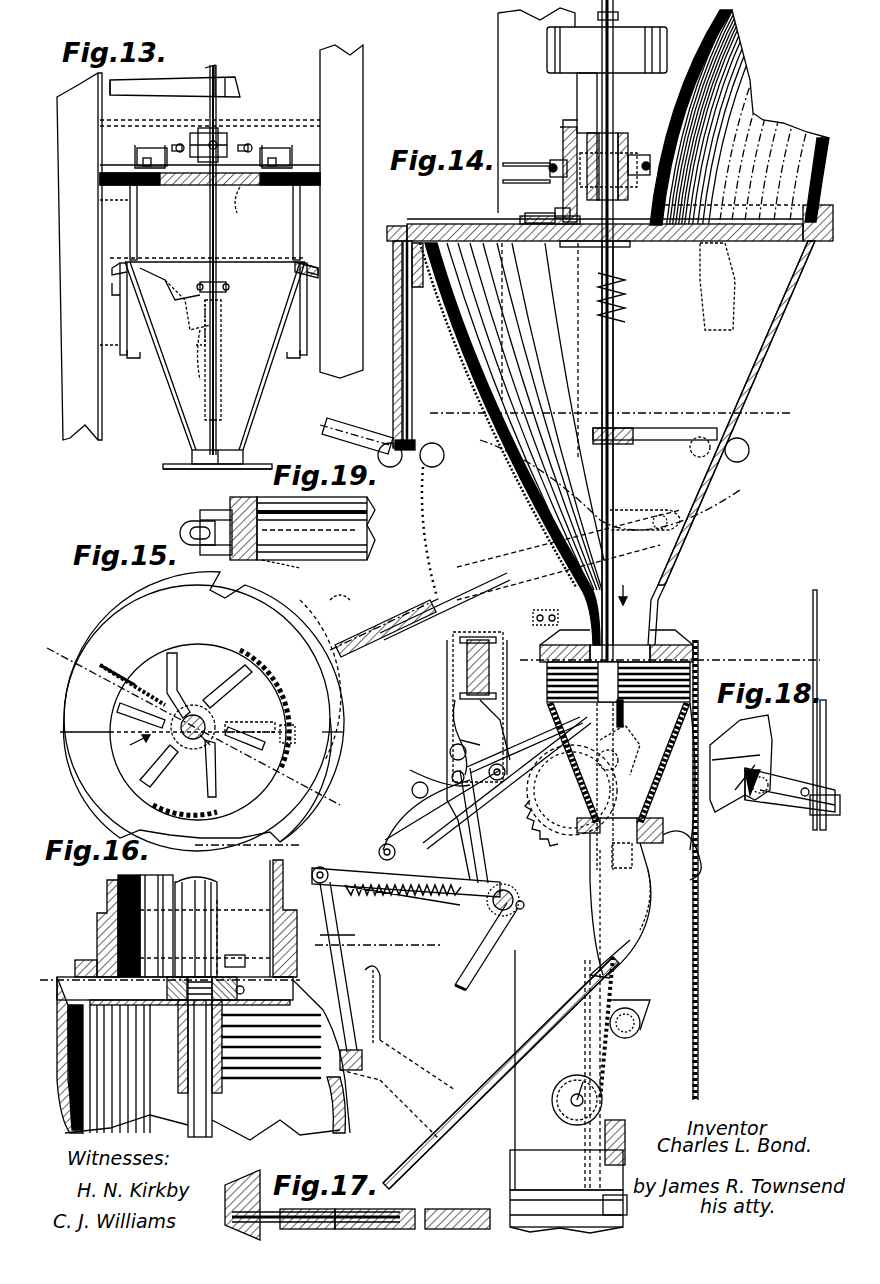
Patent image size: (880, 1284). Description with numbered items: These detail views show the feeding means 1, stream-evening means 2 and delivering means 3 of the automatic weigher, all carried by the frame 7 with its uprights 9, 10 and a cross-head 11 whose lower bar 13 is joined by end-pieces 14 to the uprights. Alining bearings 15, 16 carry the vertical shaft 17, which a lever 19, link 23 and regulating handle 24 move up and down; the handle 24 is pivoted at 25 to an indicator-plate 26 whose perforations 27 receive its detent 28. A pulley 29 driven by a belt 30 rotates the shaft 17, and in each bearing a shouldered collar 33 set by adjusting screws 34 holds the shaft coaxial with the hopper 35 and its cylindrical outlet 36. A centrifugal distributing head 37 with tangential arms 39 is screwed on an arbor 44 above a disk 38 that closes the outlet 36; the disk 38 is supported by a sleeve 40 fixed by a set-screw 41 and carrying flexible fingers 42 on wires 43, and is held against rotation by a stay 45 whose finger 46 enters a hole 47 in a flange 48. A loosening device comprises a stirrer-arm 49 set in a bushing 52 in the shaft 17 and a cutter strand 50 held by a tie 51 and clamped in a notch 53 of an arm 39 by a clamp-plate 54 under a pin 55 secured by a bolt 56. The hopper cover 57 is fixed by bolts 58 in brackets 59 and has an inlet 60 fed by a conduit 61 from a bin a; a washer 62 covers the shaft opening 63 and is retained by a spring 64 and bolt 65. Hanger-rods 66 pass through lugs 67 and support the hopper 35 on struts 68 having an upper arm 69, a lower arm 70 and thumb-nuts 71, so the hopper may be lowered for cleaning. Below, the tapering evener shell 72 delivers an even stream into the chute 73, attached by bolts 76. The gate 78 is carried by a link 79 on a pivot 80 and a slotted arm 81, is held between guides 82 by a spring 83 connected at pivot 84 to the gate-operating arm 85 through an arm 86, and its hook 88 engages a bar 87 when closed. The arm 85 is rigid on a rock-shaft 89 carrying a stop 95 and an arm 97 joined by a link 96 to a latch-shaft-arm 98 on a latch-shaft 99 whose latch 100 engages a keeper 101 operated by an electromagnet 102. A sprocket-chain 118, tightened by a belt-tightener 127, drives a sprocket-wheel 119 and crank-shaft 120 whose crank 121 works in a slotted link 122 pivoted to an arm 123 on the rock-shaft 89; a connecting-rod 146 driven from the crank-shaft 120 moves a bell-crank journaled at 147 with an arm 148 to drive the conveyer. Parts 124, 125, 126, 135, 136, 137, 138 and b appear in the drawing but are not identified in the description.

In FIG. 14, the feeding means 1 is at (770, 370).
In FIG. 14, the stream-evening means 2 is at (748, 652).
In FIG. 14, the delivering means 3 is at (497, 1100).
In FIG. 14, the frame 7 is at (505, 1155).
In FIG. 13, the upright 9 is at (300, 215).
In FIG. 14, the upright 9 is at (510, 500).
In FIG. 13, the upright 10 is at (187, 265).
In FIG. 14, the upright 10 is at (468, 432).
In FIG. 13, the cross-head 11 is at (305, 130).
In FIG. 14, the cross-head 11 is at (528, 125).
In FIG. 13, the lower bar 13 is at (255, 125).
In FIG. 14, the lower bar 13 is at (563, 135).
In FIG. 13, the end-pieces 14 is at (318, 72).
In FIG. 14, the end-pieces 14 is at (510, 72).
In FIG. 15, the alining bearing 15 is at (326, 839).
In FIG. 16, the alining bearing 15 is at (190, 911).
In FIG. 14, the alining bearing 15 is at (667, 655).
In FIG. 13, the alining bearing 16 is at (197, 135).
In FIG. 15, the alining bearing 16 is at (210, 720).
In FIG. 14, the alining bearing 16 is at (640, 138).
In FIG. 13, the vertical shaft 17 is at (218, 325).
In FIG. 15, the vertical shaft 17 is at (205, 705).
In FIG. 16, the vertical shaft 17 is at (200, 878).
In FIG. 14, the vertical shaft 17 is at (615, 372).
In FIG. 16, the lever 19 is at (315, 934).
In FIG. 14, the lever 19 is at (418, 945).
In FIG. 14, the link 23 is at (615, 10).
In FIG. 14, the regulating handle 24 is at (372, 630).
In FIG. 14, the pivot 25 is at (690, 520).
In FIG. 14, the indicator-plate 26 is at (451, 532).
In FIG. 14, the perforations 27 is at (420, 530).
In FIG. 14, the pin or detent 28 is at (440, 610).
In FIG. 13, the pulley 29 is at (215, 88).
In FIG. 14, the pulley 29 is at (607, 50).
In FIG. 13, the belt 30 is at (165, 80).
In FIG. 13, the shouldered collar 33 is at (220, 135).
In FIG. 14, the shouldered collar 33 is at (622, 130).
In FIG. 13, the horizontal adjusting screws 34 is at (213, 145).
In FIG. 14, the horizontal adjusting screws 34 is at (548, 168).
In FIG. 13, the hopper 35 is at (192, 360).
In FIG. 14, the hopper 35 is at (778, 320).
In FIG. 13, the cylindrical outlet 36 is at (205, 473).
In FIG. 15, the cylindrical outlet 36 is at (252, 838).
In FIG. 16, the cylindrical outlet 36 is at (240, 890).
In FIG. 14, the cylindrical outlet 36 is at (650, 580).
In FIG. 15, the centrifugal distributing head 37 is at (130, 745).
In FIG. 16, the centrifugal distributing head 37 is at (165, 965).
In FIG. 18, the centrifugal distributing head 37 is at (741, 763).
In FIG. 14, the centrifugal distributing head 37 is at (660, 640).
In FIG. 15, the disk 38 is at (140, 780).
In FIG. 16, the disk 38 is at (298, 986).
In FIG. 14, the disk 38 is at (680, 655).
In FIG. 15, the tangential arms 39 is at (155, 648).
In FIG. 16, the tangential arms 39 is at (175, 991).
In FIG. 18, the tangential arms 39 is at (835, 815).
In FIG. 16, the sleeve 40 is at (202, 1126).
In FIG. 17, the sleeve 40 is at (243, 1180).
In FIG. 14, the sleeve 40 is at (630, 735).
In FIG. 15, the set-screw 41 is at (205, 680).
In FIG. 16, the set-screw 41 is at (185, 1063).
In FIG. 15, the flexible fingers 42 is at (98, 722).
In FIG. 16, the flexible fingers 42 is at (275, 1060).
In FIG. 17, the flexible fingers 42 is at (430, 1210).
In FIG. 14, the flexible fingers 42 is at (631, 737).
In FIG. 15, the wires 43 is at (191, 750).
In FIG. 16, the wires 43 is at (255, 1075).
In FIG. 17, the wires 43 is at (270, 1210).
In FIG. 16, the arbor 44 is at (212, 1120).
In FIG. 14, the arbor 44 is at (612, 750).
In FIG. 15, the stay 45 is at (125, 680).
In FIG. 16, the stay 45 is at (95, 1005).
In FIG. 15, the upright finger 46 is at (100, 665).
In FIG. 16, the upright finger 46 is at (105, 1010).
In FIG. 14, the upright finger 46 is at (595, 715).
In FIG. 16, the hole 47 is at (85, 960).
In FIG. 13, the flange 48 is at (243, 457).
In FIG. 16, the flange 48 is at (93, 935).
In FIG. 14, the flange 48 is at (340, 607).
In FIG. 13, the arm 49 is at (195, 285).
In FIG. 14, the arm 49 is at (680, 440).
In FIG. 13, the strand 50 is at (188, 305).
In FIG. 15, the strand 50 is at (260, 720).
In FIG. 16, the strand 50 is at (272, 890).
In FIG. 14, the strand 50 is at (705, 505).
In FIG. 13, the tie 51 is at (189, 362).
In FIG. 14, the tie 51 is at (658, 600).
In FIG. 13, the bushing 52 is at (220, 282).
In FIG. 14, the bushing 52 is at (630, 428).
In FIG. 18, the notch 53 is at (828, 795).
In FIG. 15, the clamp-plate 54 is at (249, 743).
In FIG. 16, the clamp-plate 54 is at (243, 948).
In FIG. 18, the clamp-plate 54 is at (805, 800).
In FIG. 15, the pin 55 is at (280, 745).
In FIG. 16, the pin 55 is at (251, 973).
In FIG. 18, the pin 55 is at (805, 775).
In FIG. 15, the screw or bolt 56 is at (238, 725).
In FIG. 16, the screw or bolt 56 is at (237, 918).
In FIG. 18, the screw or bolt 56 is at (760, 793).
In FIG. 13, the hopper top or cover 57 is at (178, 185).
In FIG. 14, the hopper top or cover 57 is at (440, 224).
In FIG. 13, the bolts 58 is at (145, 160).
In FIG. 14, the bolts 58 is at (660, 178).
In FIG. 13, the brackets 59 is at (135, 200).
In FIG. 14, the brackets 59 is at (625, 243).
In FIG. 13, the inlet 60 is at (248, 209).
In FIG. 14, the inlet 60 is at (770, 243).
In FIG. 14, the conduit 61 is at (755, 146).
In FIG. 14, the washer 62 is at (580, 241).
In FIG. 14, the opening 63 is at (620, 270).
In FIG. 14, the spring 64 is at (525, 216).
In FIG. 14, the bolt 65 is at (558, 210).
In FIG. 13, the hanger-rods 66 is at (100, 200).
In FIG. 14, the hanger-rods 66 is at (413, 372).
In FIG. 13, the perforated lugs 67 is at (118, 280).
In FIG. 14, the perforated lugs 67 is at (395, 295).
In FIG. 13, the struts 68 is at (225, 285).
In FIG. 14, the struts 68 is at (395, 375).
In FIG. 13, the upper strut-arm 69 is at (298, 262).
In FIG. 14, the upper strut-arm 69 is at (420, 287).
In FIG. 13, the lower strut-arm 70 is at (133, 360).
In FIG. 13, the thumb-nuts 71 is at (165, 295).
In FIG. 14, the thumb-nuts 71 is at (360, 436).
In FIG. 14, the shell 72 is at (695, 760).
In FIG. 14, the chute 73 is at (625, 945).
In FIG. 14, the bolts 76 is at (658, 900).
In FIG. 14, the gate 78 is at (382, 1000).
In FIG. 19, the link 79 is at (180, 533).
In FIG. 14, the link 79 is at (335, 937).
In FIG. 19, the pivot 80 is at (212, 556).
In FIG. 19, the slotted arm 81 is at (240, 530).
In FIG. 14, the slotted arm 81 is at (344, 949).
In FIG. 19, the guides 82 is at (380, 578).
In FIG. 14, the guides 82 is at (385, 1040).
In FIG. 14, the spring 83 is at (430, 855).
In FIG. 14, the pivot 84 is at (327, 870).
In FIG. 14, the gate-operating arm 85 is at (415, 892).
In FIG. 14, the arm 86 is at (478, 925).
In FIG. 19, the bar 87 is at (286, 571).
In FIG. 14, the bar 87 is at (390, 1068).
In FIG. 19, the hook 88 is at (308, 538).
In FIG. 14, the hook 88 is at (378, 975).
In FIG. 14, the rock-shaft 89 is at (515, 915).
In FIG. 14, the stop 95 is at (500, 960).
In FIG. 14, the link 96 is at (438, 767).
In FIG. 14, the arm 97 is at (412, 790).
In FIG. 14, the latch-shaft-arm 98 is at (438, 735).
In FIG. 14, the latch-shaft 99 is at (450, 750).
In FIG. 14, the latch 100 is at (455, 700).
In FIG. 14, the keeper 101 is at (470, 700).
In FIG. 14, the electromagnet 102 is at (460, 645).
In FIG. 14, the sprocket-chain 118 is at (700, 1003).
In FIG. 14, the sprocket-wheel 119 is at (690, 830).
In FIG. 14, the crank-shaft 120 is at (628, 828).
In FIG. 14, the crank 121 is at (571, 795).
In FIG. 14, the slotted link 122 is at (486, 825).
In FIG. 14, the arm 123 is at (505, 815).
In FIG. 14, the arm 124 is at (425, 807).
In FIG. 14, the arm 125 is at (508, 730).
In FIG. 14, the pivot 126 is at (437, 757).
In FIG. 14, the belt-tightener 127 is at (565, 1083).
In FIG. 14, the pivot 135 is at (486, 782).
In FIG. 14, the arm 136 is at (398, 756).
In FIG. 14, the rod 137 is at (525, 745).
In FIG. 14, the link 138 is at (485, 845).
In FIG. 14, the connecting-rod 146 is at (615, 990).
In FIG. 14, the bell-crank journal 147 is at (540, 1190).
In FIG. 14, the arm 148 is at (620, 1150).
In FIG. 14, the bin or receptacle a is at (712, 35).
In FIG. 14, the pin b is at (560, 905).